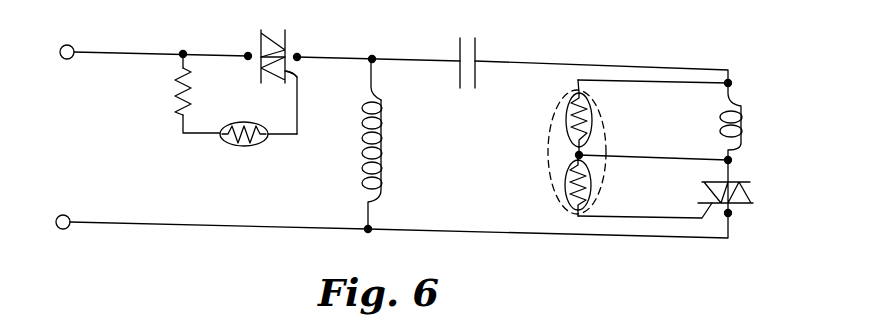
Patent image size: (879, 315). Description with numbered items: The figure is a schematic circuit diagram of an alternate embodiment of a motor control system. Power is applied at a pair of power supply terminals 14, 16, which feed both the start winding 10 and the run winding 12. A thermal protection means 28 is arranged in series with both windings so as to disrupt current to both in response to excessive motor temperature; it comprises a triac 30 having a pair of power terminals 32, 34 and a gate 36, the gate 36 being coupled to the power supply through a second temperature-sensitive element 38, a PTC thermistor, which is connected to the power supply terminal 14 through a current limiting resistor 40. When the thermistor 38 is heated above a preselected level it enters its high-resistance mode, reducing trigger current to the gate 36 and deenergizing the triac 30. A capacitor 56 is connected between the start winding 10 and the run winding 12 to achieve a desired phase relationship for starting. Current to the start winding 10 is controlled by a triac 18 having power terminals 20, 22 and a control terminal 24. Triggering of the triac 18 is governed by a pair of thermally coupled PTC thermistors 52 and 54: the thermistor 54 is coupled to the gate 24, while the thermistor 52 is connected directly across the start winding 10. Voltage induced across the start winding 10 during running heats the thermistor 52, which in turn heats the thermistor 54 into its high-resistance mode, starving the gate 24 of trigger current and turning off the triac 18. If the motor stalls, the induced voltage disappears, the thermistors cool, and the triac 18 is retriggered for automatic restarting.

The start winding 10 is at (743, 128).
The run winding 12 is at (383, 153).
The power supply terminal 14 is at (65, 45).
The power supply terminal 16 is at (62, 215).
The triac 18 is at (745, 190).
The power terminal 20 is at (730, 160).
The power terminal 22 is at (730, 214).
The control terminal 24 is at (698, 211).
The thermal protection means 28 is at (221, 112).
The triac 30 is at (265, 31).
The power terminal 32 is at (249, 54).
The power terminal 34 is at (298, 56).
The gate 36 is at (298, 78).
The second temperature-sensitive element 38 is at (231, 146).
The current limiting resistor 40 is at (175, 106).
The PTC thermistor 52 is at (567, 118).
The PTC thermistor 54 is at (565, 185).
The capacitor 56 is at (476, 49).